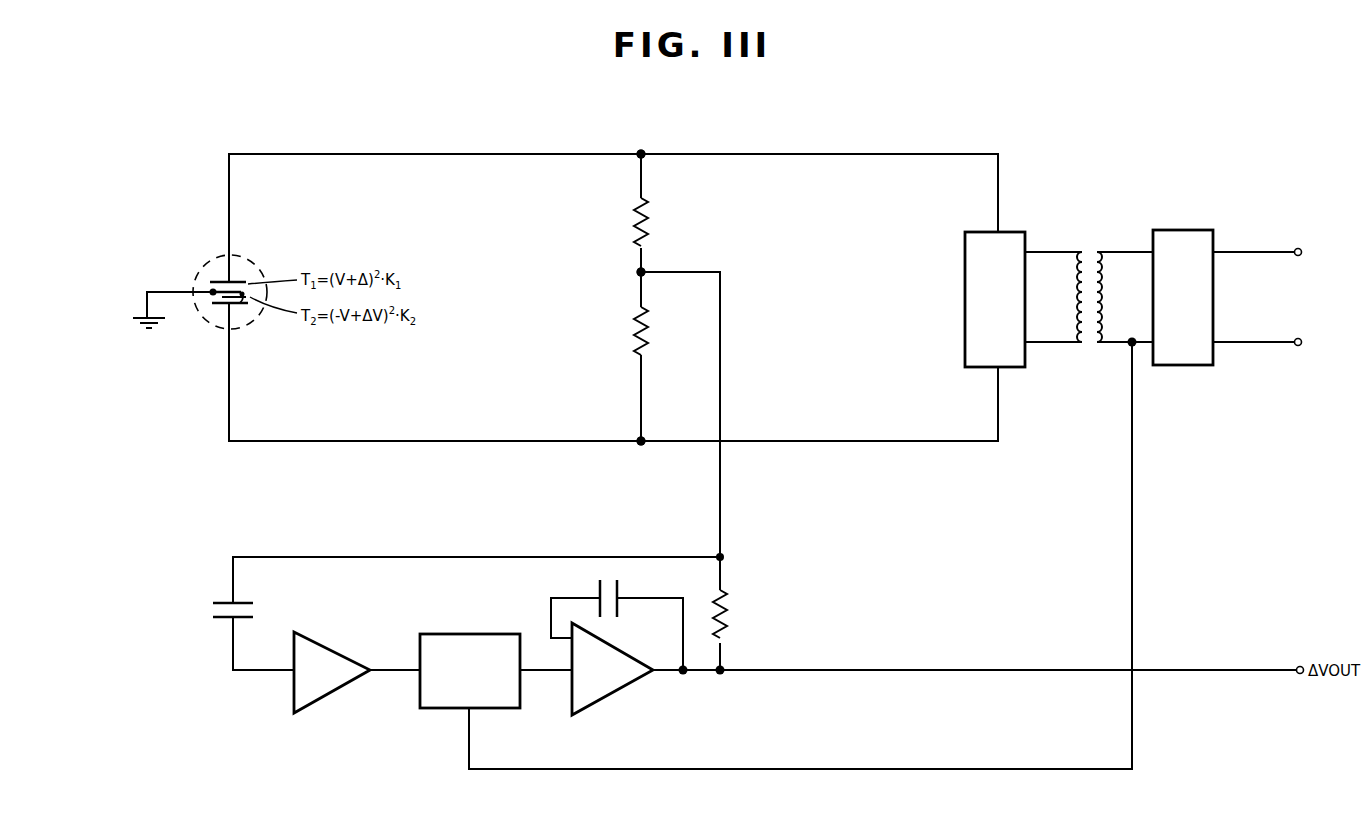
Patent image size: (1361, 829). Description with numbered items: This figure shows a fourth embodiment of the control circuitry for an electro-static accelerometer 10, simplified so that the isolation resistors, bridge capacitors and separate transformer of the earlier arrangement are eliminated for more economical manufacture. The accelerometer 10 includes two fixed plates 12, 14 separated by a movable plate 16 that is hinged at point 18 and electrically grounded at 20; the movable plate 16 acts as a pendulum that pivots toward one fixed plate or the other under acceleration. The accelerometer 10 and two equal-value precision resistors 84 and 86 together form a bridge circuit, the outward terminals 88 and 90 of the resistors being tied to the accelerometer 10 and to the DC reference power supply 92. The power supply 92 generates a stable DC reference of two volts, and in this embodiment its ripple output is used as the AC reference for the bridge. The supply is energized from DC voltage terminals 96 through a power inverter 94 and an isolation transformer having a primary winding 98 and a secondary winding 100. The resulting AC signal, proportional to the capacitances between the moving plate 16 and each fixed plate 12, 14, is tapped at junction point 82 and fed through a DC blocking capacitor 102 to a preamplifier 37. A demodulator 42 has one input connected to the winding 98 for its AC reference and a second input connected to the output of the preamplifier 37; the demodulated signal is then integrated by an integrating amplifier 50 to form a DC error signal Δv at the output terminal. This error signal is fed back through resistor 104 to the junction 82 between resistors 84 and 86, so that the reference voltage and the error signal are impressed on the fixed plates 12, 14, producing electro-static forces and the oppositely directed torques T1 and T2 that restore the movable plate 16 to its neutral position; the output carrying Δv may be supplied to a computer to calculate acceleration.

The electro-static accelerometer 10 is at (212, 253).
The fixed plate 12 is at (246, 282).
The fixed plate 14 is at (241, 303).
The movable plate 16 is at (222, 303).
The hinge point 18 is at (213, 292).
The ground 20 is at (133, 320).
The preamplifier 37 is at (343, 655).
The demodulator 42 is at (520, 710).
The integrating amplifier 50 is at (690, 657).
The junction point 82 is at (636, 273).
The precision resistor 84 is at (632, 221).
The precision resistor 86 is at (634, 327).
The outward terminal 88 is at (644, 150).
The outward terminal 90 is at (647, 439).
The DC reference power supply 92 is at (965, 247).
The power inverter 94 is at (1190, 230).
The DC voltage terminals 96 is at (1246, 340).
The primary winding 98 is at (1105, 250).
The secondary winding 100 is at (1052, 341).
The DC blocking capacitor 102 is at (210, 610).
The resistor 104 is at (728, 620).